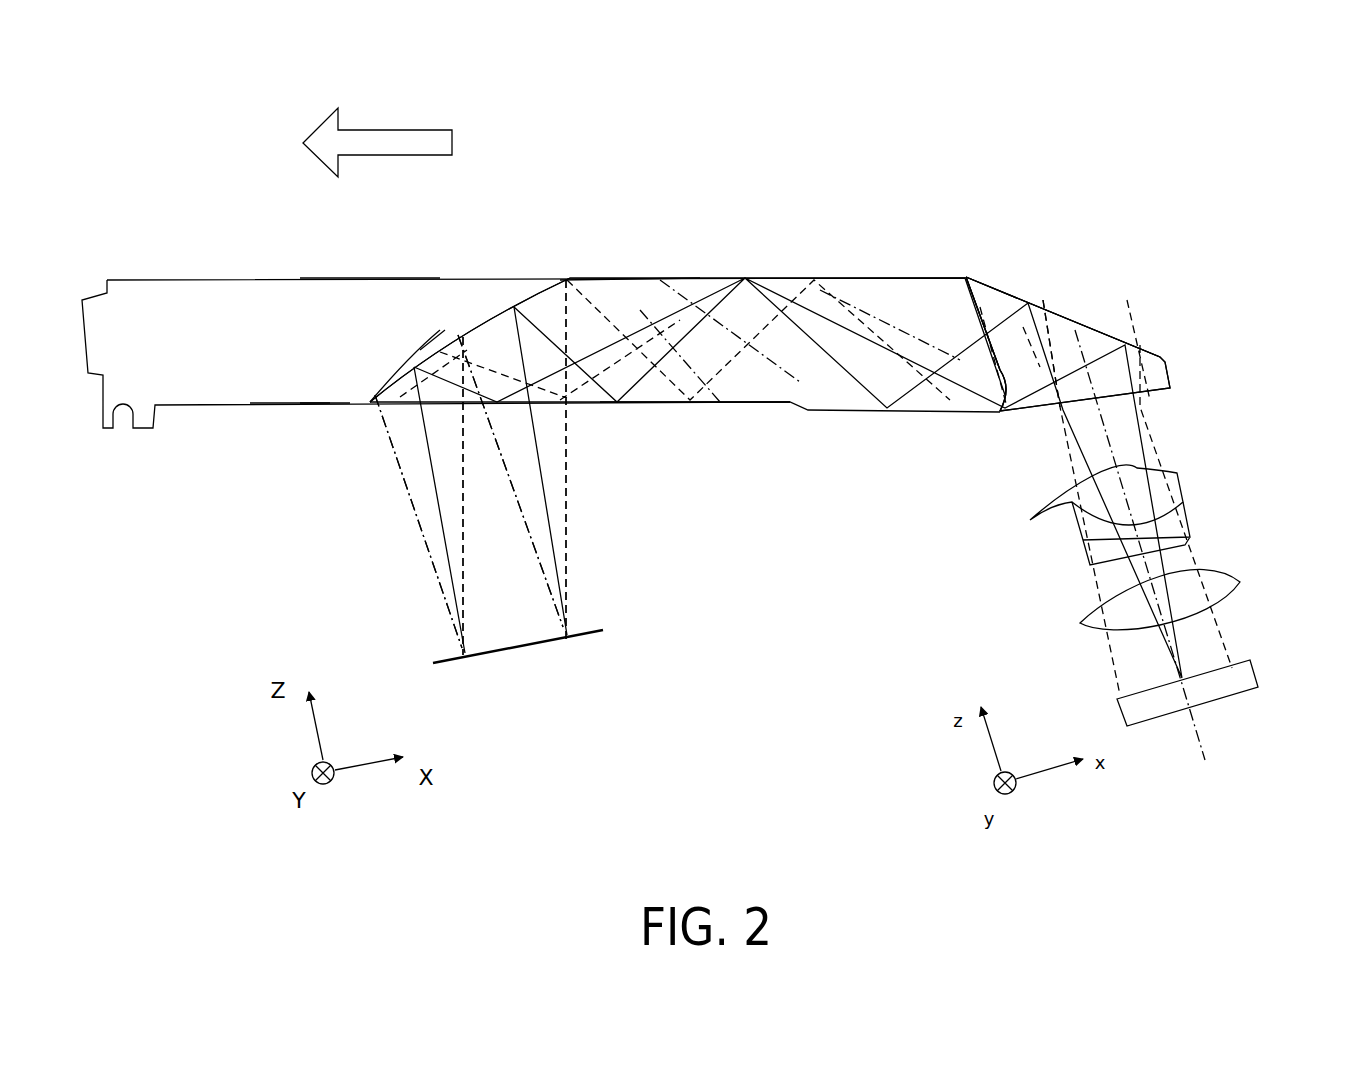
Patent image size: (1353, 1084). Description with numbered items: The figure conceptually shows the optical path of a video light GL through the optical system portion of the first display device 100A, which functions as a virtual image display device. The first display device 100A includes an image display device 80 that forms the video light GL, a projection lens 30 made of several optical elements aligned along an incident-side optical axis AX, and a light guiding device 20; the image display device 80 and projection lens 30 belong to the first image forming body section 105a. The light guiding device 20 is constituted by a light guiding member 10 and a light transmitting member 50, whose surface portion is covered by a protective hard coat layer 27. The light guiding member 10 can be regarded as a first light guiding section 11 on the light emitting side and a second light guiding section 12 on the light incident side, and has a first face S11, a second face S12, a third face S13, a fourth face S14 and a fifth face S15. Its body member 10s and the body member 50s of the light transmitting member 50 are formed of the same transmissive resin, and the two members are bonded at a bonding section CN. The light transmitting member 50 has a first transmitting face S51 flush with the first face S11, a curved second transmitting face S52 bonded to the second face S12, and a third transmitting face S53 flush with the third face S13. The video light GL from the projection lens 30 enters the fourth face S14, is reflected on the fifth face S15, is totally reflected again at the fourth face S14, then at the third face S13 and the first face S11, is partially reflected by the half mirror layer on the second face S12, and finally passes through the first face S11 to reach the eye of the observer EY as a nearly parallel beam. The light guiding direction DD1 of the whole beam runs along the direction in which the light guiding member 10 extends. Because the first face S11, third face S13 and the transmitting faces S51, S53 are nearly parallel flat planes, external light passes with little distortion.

The light guiding direction DD1 is at (402, 138).
The light transmitting member 50 is at (293, 278).
The third transmitting face S53 is at (368, 278).
The first transmitting face S51 is at (283, 404).
The body member 50s is at (322, 404).
The second transmitting face S52 is at (432, 405).
The light guiding member 10 is at (828, 505).
The second face S12 is at (487, 320).
The first light guiding section 11 is at (598, 278).
The third face S13 is at (760, 278).
The first face S11 is at (607, 403).
The body member 10s is at (649, 403).
The bonding section CN is at (431, 336).
The second light guiding section 12 is at (1003, 295).
The fourth face S14 is at (972, 415).
The fifth face S15 is at (1088, 332).
The hard coat layer 27 is at (460, 278).
The light guiding device 20 is at (548, 197).
The first image forming body section 105a is at (722, 612).
The first display device 100A is at (662, 762).
The eye of the observer EY is at (544, 647).
The video light GL is at (518, 518).
The projection lens 30 is at (1228, 557).
The incident-side optical axis AX is at (1208, 732).
The image display device 80 is at (1155, 712).